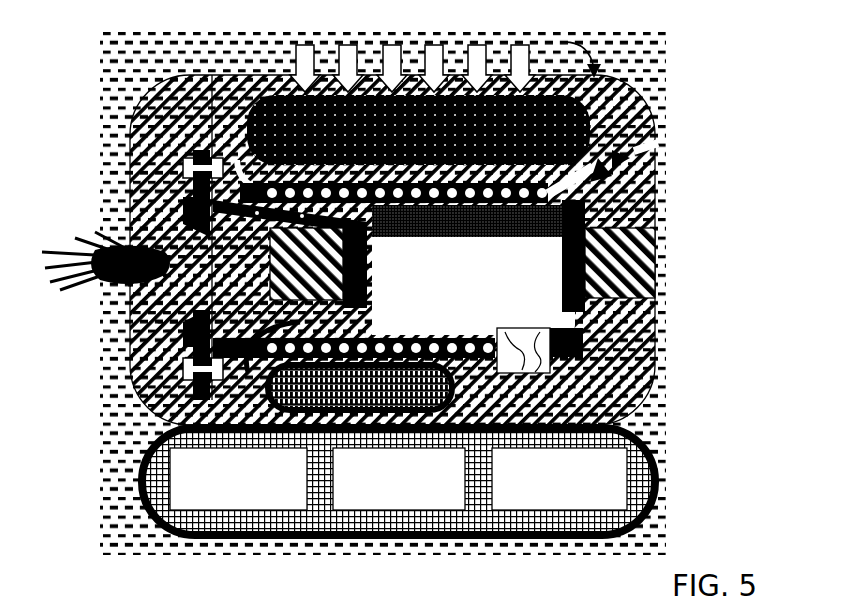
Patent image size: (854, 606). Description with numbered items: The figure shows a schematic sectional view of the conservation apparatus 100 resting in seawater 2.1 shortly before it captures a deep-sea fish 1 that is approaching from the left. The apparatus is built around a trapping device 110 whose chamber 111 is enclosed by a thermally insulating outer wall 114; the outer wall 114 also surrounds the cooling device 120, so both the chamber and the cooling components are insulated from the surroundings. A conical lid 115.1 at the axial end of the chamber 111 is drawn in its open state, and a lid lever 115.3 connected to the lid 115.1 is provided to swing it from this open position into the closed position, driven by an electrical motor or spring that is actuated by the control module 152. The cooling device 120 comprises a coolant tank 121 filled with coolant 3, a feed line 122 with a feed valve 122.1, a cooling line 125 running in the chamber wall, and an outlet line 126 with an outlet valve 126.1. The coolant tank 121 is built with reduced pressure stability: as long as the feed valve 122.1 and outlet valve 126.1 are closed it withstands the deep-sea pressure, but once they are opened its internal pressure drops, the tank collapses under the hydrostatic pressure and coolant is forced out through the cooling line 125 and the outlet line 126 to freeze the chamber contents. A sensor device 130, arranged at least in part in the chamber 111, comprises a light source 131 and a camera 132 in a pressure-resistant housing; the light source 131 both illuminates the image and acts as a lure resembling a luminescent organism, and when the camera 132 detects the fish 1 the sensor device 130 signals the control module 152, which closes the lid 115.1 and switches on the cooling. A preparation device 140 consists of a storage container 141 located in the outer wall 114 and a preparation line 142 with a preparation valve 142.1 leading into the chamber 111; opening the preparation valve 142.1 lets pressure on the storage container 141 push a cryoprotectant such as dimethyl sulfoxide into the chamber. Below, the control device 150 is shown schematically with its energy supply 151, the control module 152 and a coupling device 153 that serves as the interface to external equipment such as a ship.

The conservation apparatus 100 is at (123, 80).
The deep-sea fish 1 is at (76, 262).
The seawater 2.1 is at (652, 425).
The coolant 3 is at (359, 144).
The trapping device 110 is at (722, 190).
The chamber 111 is at (562, 312).
The thermally insulating outer wall 114 is at (647, 110).
The lid 115.1 is at (318, 266).
The lid lever 115.3 is at (258, 220).
The cooling device 120 is at (722, 75).
The coolant tank 121 is at (431, 138).
The feed line 122 is at (247, 136).
The feed valve 122.1 is at (243, 150).
The cooling line 125 is at (382, 340).
The outlet line 126 is at (652, 164).
The outlet valve 126.1 is at (598, 166).
The sensor device 130 is at (546, 372).
The light source 131 is at (510, 372).
The camera 132 is at (546, 372).
The preparation device 140 is at (241, 355).
The storage container 141 is at (376, 400).
The preparation line 142 is at (252, 334).
The preparation valve 142.1 is at (218, 364).
The control device 150 is at (342, 481).
The energy supply 151 is at (238, 479).
The control module 152 is at (399, 479).
The coupling device 153 is at (559, 479).